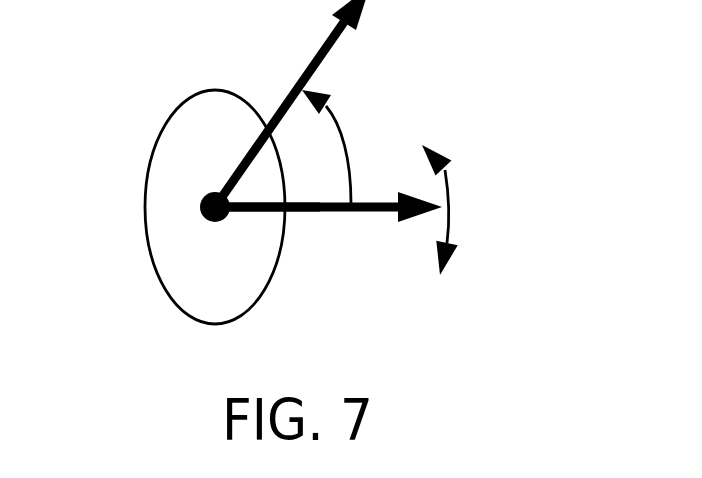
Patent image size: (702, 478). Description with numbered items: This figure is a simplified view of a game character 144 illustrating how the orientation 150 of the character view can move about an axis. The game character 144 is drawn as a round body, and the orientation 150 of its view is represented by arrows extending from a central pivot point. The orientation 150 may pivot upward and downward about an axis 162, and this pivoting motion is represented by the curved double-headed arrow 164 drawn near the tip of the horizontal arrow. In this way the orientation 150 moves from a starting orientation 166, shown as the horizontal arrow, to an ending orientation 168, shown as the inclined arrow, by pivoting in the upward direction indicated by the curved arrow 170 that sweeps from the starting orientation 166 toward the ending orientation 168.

The game character 144 is at (148, 194).
The orientation 150 is at (313, 62).
The axis 162 is at (206, 221).
The arrow 164 is at (450, 203).
The starting orientation 166 is at (365, 213).
The ending orientation 168 is at (334, 35).
The arrow 170 is at (348, 138).